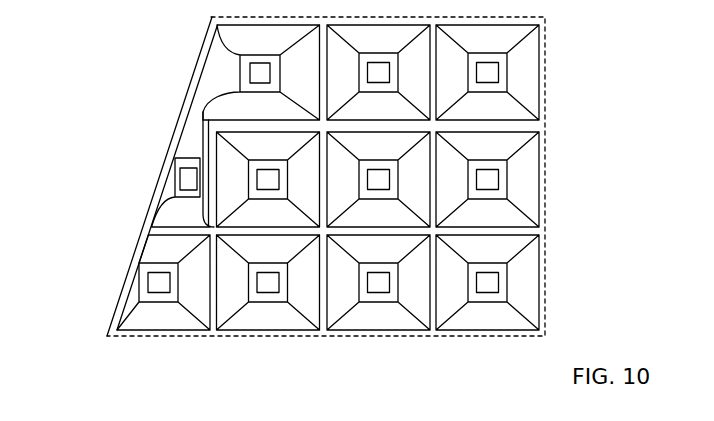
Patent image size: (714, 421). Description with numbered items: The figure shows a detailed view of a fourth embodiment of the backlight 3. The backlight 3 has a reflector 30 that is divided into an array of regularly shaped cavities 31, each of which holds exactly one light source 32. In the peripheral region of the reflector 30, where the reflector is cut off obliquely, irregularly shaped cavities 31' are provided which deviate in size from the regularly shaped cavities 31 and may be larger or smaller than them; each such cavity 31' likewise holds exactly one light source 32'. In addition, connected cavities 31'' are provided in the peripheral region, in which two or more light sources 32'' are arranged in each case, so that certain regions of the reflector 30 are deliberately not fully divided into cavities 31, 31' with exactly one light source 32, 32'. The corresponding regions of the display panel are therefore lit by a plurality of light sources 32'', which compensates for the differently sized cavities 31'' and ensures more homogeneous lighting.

The backlight 3 is at (348, 168).
The reflector 30 is at (545, 220).
The regularly shaped cavities 31 is at (525, 179).
The light source 32 is at (539, 293).
The irregularly shaped cavities 31' is at (118, 268).
The light source 32' is at (98, 303).
The connected cavities 31'' is at (143, 176).
The light sources 32'' is at (167, 109).